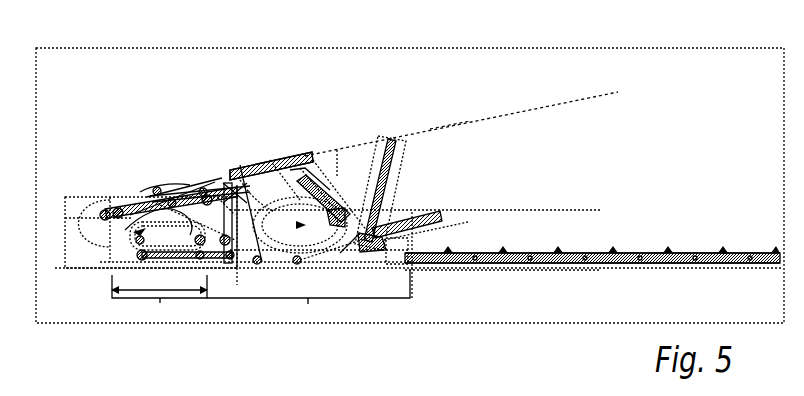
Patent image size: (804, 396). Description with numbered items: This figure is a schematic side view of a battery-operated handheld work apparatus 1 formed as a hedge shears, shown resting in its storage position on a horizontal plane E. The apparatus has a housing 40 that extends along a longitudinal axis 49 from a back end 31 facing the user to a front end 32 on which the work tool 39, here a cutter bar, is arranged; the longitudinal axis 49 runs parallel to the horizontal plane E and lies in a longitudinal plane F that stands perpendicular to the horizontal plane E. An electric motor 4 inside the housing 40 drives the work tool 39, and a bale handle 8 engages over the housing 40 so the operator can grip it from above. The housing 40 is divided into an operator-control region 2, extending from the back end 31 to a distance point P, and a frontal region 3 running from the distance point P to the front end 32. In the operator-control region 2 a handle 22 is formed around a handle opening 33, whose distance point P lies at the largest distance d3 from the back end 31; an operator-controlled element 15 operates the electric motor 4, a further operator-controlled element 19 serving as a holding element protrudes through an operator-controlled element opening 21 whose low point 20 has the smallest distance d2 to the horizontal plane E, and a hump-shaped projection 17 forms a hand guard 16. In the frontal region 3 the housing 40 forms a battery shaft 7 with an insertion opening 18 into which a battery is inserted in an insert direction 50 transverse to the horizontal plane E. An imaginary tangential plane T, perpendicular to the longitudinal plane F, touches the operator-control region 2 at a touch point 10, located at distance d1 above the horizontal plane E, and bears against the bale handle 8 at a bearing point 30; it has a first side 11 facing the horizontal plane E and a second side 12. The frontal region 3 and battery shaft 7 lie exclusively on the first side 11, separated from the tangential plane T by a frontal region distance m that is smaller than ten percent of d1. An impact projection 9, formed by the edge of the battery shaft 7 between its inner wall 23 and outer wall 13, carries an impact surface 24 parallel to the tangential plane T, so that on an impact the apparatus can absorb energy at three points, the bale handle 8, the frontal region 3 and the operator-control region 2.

The handheld work apparatus 1 is at (180, 100).
The insert direction 50 is at (270, 104).
The operator-controlled element opening 21 is at (155, 192).
The outer wall of the battery shaft 13 is at (200, 182).
The battery shaft 7 is at (247, 160).
The impact projection 9 is at (271, 166).
The further operator-controlled element 19 is at (170, 178).
The low point 20 is at (150, 202).
The hand guard 16 is at (176, 200).
The touch point 10 is at (197, 195).
The projection 17 is at (227, 192).
The impact surface 24 is at (258, 173).
The inner wall of the battery shaft 23 is at (283, 162).
The insertion opening 18 is at (290, 168).
The electric motor 4 is at (337, 165).
The frontal region distance m is at (320, 160).
The bearing point 30 is at (390, 138).
The housing 40 is at (346, 190).
The bale handle 8 is at (395, 186).
The second side of the tangential plane 12 is at (450, 113).
The first side of the tangential plane 11 is at (453, 138).
The imaginary tangential plane T is at (476, 120).
The longitudinal axis 49 is at (570, 208).
The front end 32 is at (420, 241).
The work tool 39 is at (648, 256).
The horizontal plane E is at (448, 272).
The distance d2 is at (62, 199).
The back end 31 is at (112, 228).
The handle 22 is at (120, 250).
The handle opening 33 is at (136, 254).
The operator-controlled element 15 is at (167, 236).
The distance point P is at (207, 239).
The distance d3 is at (159, 283).
The operator-control region 2 is at (159, 299).
The frontal region 3 is at (308, 296).
The distance d1 is at (250, 270).
The longitudinal plane F is at (112, 324).